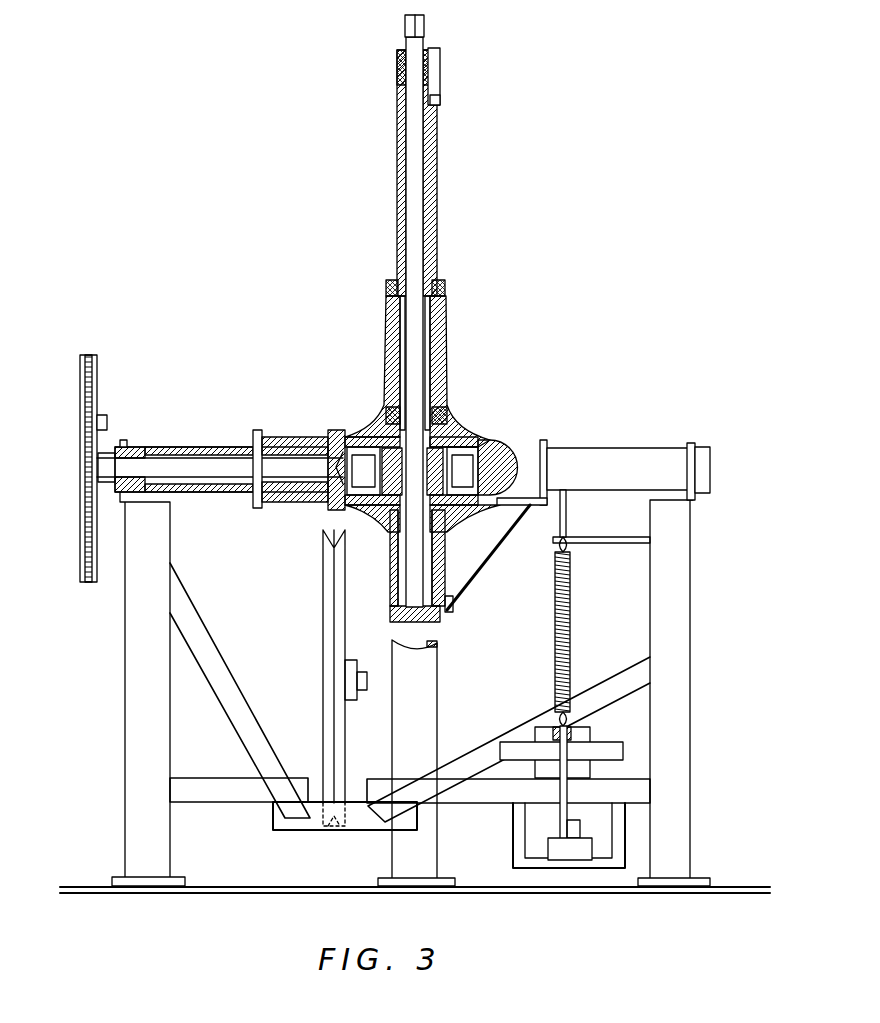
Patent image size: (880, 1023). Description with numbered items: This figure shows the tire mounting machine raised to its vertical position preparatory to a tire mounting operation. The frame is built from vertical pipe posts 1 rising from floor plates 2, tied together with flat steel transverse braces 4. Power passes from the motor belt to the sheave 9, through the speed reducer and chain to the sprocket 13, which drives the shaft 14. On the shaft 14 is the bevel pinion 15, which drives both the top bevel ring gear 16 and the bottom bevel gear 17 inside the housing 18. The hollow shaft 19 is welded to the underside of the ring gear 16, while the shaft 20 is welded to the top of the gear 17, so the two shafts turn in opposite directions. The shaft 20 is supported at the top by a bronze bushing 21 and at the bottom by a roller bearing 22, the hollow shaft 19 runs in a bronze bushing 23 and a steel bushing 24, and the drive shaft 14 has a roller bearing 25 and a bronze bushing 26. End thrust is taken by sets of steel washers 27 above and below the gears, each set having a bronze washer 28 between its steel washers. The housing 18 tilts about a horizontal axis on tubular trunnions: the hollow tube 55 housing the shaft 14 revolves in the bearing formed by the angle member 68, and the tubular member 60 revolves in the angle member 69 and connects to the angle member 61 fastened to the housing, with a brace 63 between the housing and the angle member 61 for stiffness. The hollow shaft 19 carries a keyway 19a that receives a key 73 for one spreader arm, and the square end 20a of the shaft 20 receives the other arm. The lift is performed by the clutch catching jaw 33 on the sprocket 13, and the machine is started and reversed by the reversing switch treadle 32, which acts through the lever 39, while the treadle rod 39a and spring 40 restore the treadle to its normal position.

The pipe posts 1 is at (142, 688).
The floor plates 2 is at (180, 882).
The transverse braces 4 is at (206, 782).
The sheave 9 is at (322, 622).
The sprocket 13 is at (82, 548).
The shaft 14 is at (182, 462).
The bevel pinion 15 is at (345, 445).
The top bevel ring gear 16 is at (483, 452).
The bottom bevel gear 17 is at (546, 450).
The housing 18 is at (447, 318).
The hollow shaft 19 is at (437, 203).
The keyway 19a is at (440, 97).
The shaft 20 is at (412, 67).
The square-shaped end 20a is at (419, 36).
The threads 21 is at (432, 82).
The roller bearing 22 is at (386, 578).
The bronze bushing 23 is at (392, 362).
The steel bushing 24 is at (386, 290).
The roller bearing 25 is at (275, 440).
The bronze bushing 26 is at (128, 442).
The steel washers 27 is at (386, 425).
The bronze washer 28 is at (450, 412).
The reversing switch treadle 32 is at (572, 845).
The clutch catching jaw 33 is at (104, 416).
The lever 39 is at (580, 733).
The reversing switch treadle rod 39a is at (600, 768).
The spring 40 is at (553, 620).
The hollow tube 55 is at (222, 450).
The tubular member 60 is at (620, 458).
The angle member 61 is at (523, 506).
The brace 63 is at (455, 580).
The angle member 68 is at (112, 450).
The angle member 69 is at (690, 444).
The key 73 is at (441, 56).